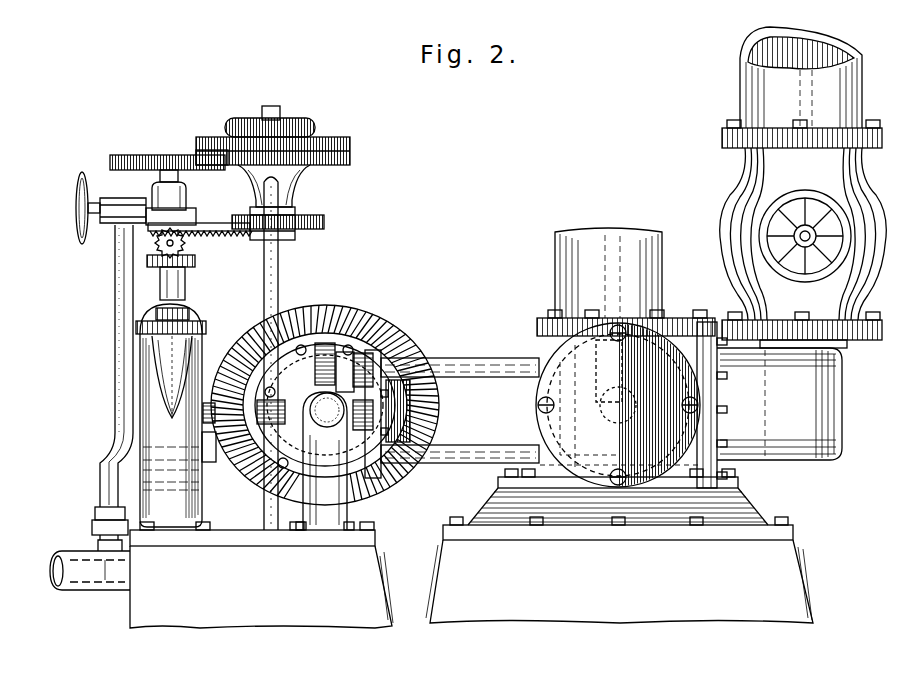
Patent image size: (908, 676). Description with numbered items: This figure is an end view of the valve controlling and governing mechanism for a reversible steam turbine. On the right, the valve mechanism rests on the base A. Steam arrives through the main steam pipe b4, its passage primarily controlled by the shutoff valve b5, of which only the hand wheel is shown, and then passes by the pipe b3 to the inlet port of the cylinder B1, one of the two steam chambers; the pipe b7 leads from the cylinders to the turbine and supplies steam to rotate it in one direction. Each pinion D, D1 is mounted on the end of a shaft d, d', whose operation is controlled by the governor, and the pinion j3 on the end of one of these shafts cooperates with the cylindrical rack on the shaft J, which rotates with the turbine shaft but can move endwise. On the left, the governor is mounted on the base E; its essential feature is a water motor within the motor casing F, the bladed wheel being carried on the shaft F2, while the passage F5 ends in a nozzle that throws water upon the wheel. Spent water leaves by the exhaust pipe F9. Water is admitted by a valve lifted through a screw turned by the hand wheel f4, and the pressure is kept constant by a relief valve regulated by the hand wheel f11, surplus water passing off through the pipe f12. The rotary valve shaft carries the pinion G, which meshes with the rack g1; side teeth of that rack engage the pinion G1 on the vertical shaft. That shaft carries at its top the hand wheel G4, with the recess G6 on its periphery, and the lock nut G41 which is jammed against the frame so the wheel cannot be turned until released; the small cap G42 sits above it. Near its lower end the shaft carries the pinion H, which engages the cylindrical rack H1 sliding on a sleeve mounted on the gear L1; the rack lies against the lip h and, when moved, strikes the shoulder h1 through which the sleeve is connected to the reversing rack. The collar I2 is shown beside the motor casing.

The exhaust pipe F9 is at (62, 572).
The pipe f12 is at (114, 292).
The hand wheel f11 is at (88, 214).
The hand wheel f4 is at (124, 156).
The hand wheel G4 is at (350, 147).
The recess G6 is at (212, 140).
The lock nut G41 is at (314, 122).
The knob G42 is at (284, 95).
The pinion G1 is at (296, 222).
The rack g1 is at (326, 228).
The pinion G is at (192, 250).
The passage F5 is at (188, 288).
The motor casing F is at (171, 415).
The shaft F2 is at (212, 464).
The collar I2 is at (208, 402).
The base E is at (261, 575).
The pinion H is at (236, 365).
The cylindrical rack H1 is at (259, 362).
The lip h is at (314, 335).
The shoulder h1 is at (319, 338).
The gear L1 is at (345, 326).
The pinion j3 is at (382, 350).
The shaft J is at (325, 461).
The shaft d is at (460, 355).
The shaft d' is at (460, 438).
The pinion D is at (600, 478).
The pinion D1 is at (604, 356).
The pipe b7 is at (608, 273).
The cylinder B1 is at (700, 328).
The pipe b3 is at (782, 400).
The shutoff valve b5 is at (798, 208).
The main steam pipe b4 is at (801, 77).
The base A is at (660, 512).